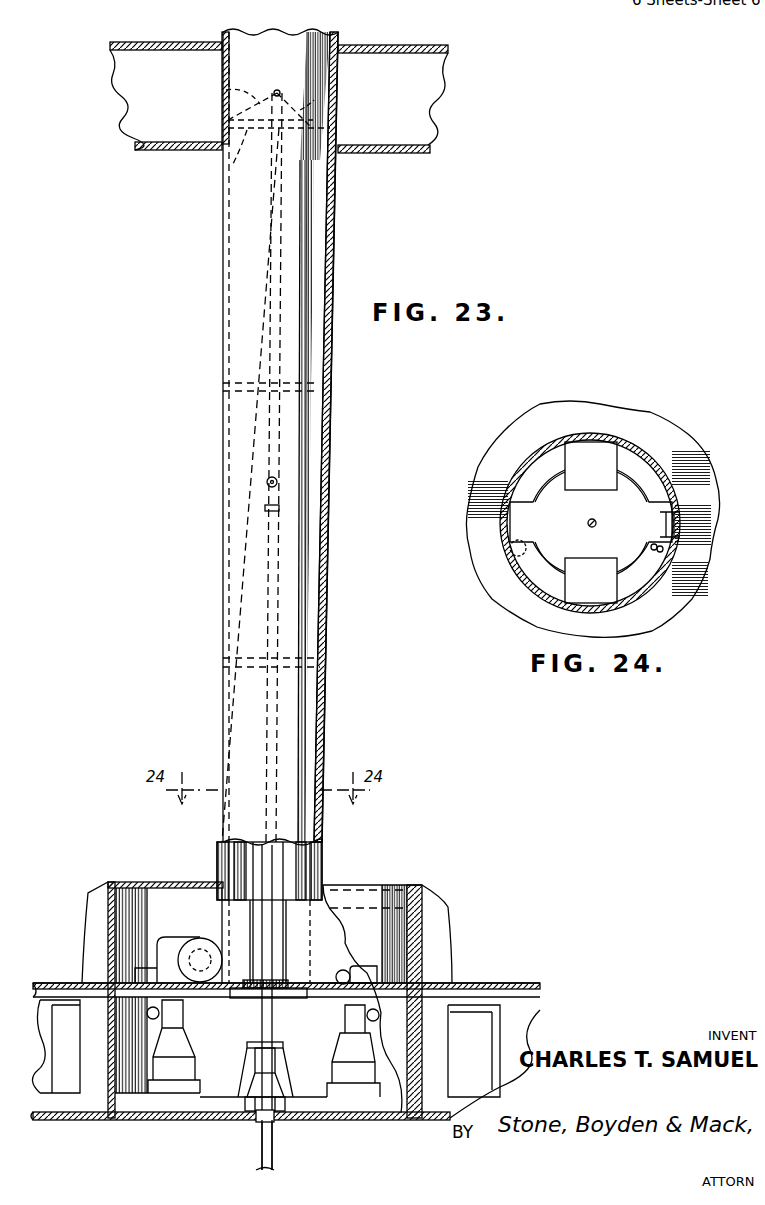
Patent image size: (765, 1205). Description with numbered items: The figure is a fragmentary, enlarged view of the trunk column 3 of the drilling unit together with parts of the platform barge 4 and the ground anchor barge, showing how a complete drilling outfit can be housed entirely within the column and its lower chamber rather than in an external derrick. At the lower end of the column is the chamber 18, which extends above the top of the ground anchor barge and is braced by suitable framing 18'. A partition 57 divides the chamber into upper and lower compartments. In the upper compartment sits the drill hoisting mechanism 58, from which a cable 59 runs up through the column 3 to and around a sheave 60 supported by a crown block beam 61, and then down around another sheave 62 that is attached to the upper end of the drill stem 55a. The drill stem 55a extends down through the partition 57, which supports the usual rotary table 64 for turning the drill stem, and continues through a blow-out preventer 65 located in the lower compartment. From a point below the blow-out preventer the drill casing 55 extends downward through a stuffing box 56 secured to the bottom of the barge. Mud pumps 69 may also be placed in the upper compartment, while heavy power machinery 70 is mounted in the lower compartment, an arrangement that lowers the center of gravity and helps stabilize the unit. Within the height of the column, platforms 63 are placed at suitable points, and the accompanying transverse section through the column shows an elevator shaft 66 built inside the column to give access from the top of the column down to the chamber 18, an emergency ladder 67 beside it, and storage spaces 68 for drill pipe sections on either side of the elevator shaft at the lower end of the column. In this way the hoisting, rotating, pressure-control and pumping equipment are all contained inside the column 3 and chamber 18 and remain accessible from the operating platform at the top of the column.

In FIG. 23, the trunk column 3 is at (327, 446).
In FIG. 23, the platform barge 4 is at (132, 104).
In FIG. 23, the chamber 18 is at (285, 1001).
In FIG. 23, the framing 18' is at (431, 1001).
In FIG. 23, the drill casing 55 is at (274, 1152).
In FIG. 23, the drill stem 55a is at (270, 623).
In FIG. 24, the drill stem 55a is at (580, 533).
In FIG. 23, the stuffing box 56 is at (256, 1120).
In FIG. 23, the partition 57 is at (228, 997).
In FIG. 23, the drill hoisting mechanism 58 is at (203, 940).
In FIG. 23, the cable 59 is at (262, 241).
In FIG. 23, the sheave 60 is at (278, 91).
In FIG. 23, the crown block beam 61 is at (222, 88).
In FIG. 23, the sheave 62 is at (278, 482).
In FIG. 23, the platforms 63 is at (336, 88).
In FIG. 23, the rotary table 64 is at (293, 997).
In FIG. 23, the blow-out preventer 65 is at (282, 1046).
In FIG. 24, the elevator shaft 66 is at (581, 478).
In FIG. 23, the emergency ladder 67 is at (306, 941).
In FIG. 24, the emergency ladder 67 is at (660, 522).
In FIG. 23, the storage spaces 68 is at (310, 858).
In FIG. 24, the storage spaces 68 is at (547, 458).
In FIG. 23, the mud pumps 69 is at (343, 975).
In FIG. 23, the heavy power machinery 70 is at (190, 1048).